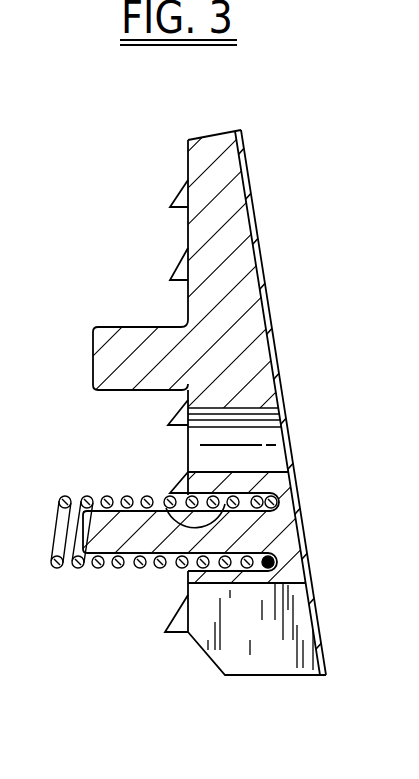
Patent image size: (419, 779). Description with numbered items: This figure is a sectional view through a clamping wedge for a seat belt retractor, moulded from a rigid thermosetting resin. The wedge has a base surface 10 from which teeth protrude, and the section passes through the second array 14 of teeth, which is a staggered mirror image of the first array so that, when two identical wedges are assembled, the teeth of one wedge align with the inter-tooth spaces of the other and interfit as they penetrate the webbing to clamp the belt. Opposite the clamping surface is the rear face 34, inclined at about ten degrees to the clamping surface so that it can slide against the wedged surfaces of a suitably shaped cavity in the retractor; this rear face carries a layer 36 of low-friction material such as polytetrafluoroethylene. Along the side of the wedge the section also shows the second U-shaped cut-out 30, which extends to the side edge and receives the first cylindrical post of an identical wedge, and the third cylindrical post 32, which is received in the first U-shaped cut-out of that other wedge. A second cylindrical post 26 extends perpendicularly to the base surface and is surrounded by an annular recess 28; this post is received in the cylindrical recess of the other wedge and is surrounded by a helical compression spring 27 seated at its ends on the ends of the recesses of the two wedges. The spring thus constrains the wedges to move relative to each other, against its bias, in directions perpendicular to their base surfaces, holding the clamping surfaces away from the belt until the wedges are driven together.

The base surface 10 is at (188, 141).
The layer of low-friction material 36 is at (244, 150).
The second array of teeth 14 is at (173, 274).
The third cylindrical post 32 is at (99, 331).
The second U-shaped cut-out 30 is at (282, 418).
The rear face 34 is at (300, 508).
The annular recess 28 is at (166, 508).
The second cylindrical post 26 is at (117, 535).
The helical compression spring 27 is at (56, 572).